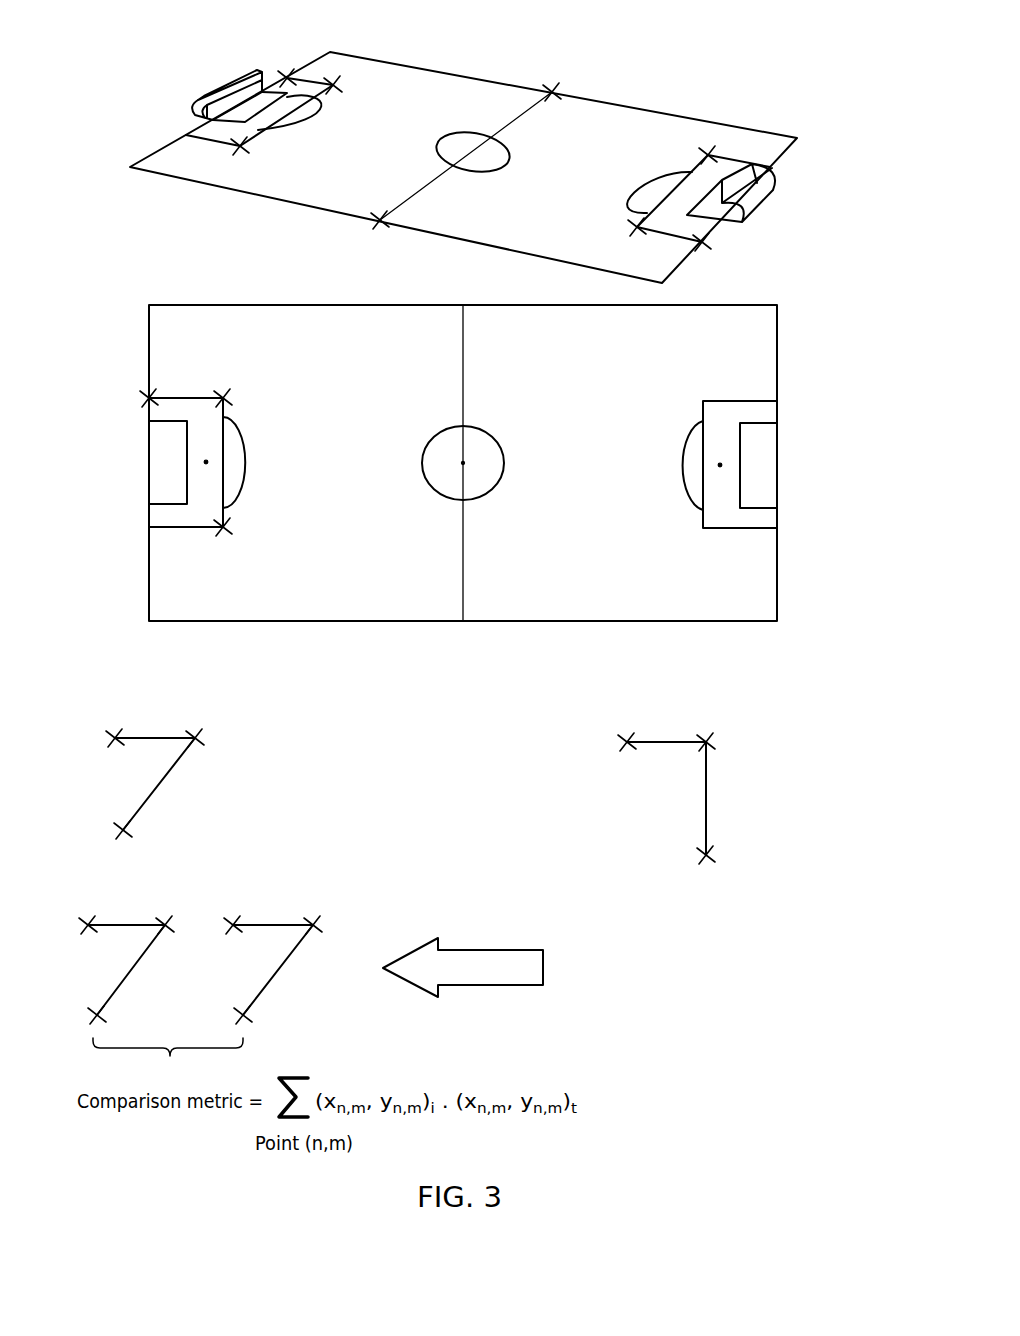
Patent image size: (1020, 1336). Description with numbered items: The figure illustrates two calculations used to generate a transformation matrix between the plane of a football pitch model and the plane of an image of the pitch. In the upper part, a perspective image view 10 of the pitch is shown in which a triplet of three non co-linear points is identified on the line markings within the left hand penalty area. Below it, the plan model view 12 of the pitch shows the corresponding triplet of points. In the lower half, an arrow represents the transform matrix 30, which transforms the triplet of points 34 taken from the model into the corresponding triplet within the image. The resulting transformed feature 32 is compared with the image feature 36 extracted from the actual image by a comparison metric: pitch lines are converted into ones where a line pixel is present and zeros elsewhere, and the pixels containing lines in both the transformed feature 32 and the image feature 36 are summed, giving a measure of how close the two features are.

The image view 10 is at (792, 212).
The model view 12 is at (790, 462).
The transform matrix 30 is at (438, 998).
The transformed feature 32 is at (292, 973).
The model triplet of points 34 is at (718, 790).
The image feature 36 is at (163, 730).